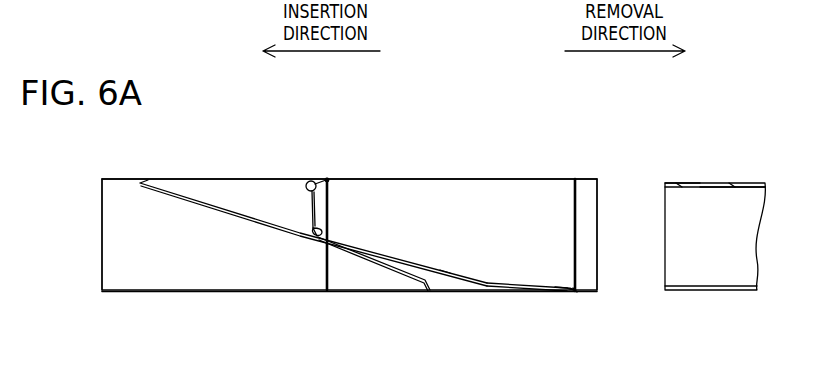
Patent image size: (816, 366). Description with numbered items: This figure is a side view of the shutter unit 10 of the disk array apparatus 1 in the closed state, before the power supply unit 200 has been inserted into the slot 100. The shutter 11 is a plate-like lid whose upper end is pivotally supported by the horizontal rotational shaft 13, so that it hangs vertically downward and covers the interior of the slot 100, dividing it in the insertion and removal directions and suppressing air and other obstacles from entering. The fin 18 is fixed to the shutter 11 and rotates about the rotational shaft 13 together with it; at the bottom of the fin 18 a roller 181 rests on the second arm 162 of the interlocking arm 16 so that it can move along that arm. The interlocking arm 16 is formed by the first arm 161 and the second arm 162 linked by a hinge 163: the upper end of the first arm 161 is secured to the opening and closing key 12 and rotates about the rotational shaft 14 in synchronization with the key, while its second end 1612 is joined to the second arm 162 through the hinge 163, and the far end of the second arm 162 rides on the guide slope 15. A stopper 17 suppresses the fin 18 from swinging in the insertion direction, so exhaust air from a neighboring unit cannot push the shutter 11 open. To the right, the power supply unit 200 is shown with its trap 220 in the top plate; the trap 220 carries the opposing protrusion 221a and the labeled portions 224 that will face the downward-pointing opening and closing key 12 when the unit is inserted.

The disk array apparatus 1 is at (244, 131).
The shutter unit 10 is at (427, 143).
The slot 100 is at (122, 267).
The shutter 11 is at (330, 275).
The opening and closing key 12 is at (589, 213).
The rotational shaft 13 is at (327, 179).
The rotational shaft 14 is at (575, 179).
The guide slope 15 is at (187, 183).
The interlocking arm 16 is at (546, 311).
The first arm 161 is at (582, 282).
The second end of the first arm 1612 is at (565, 269).
The second arm 162 is at (445, 274).
The hinge 163 is at (577, 293).
The stopper 17 is at (311, 181).
The fin 18 is at (302, 199).
The roller 181 is at (321, 233).
The power supply unit 200 is at (726, 306).
The trap 220 is at (732, 163).
The protrusion 221a is at (680, 157).
The engaging rib 224 is at (678, 186).